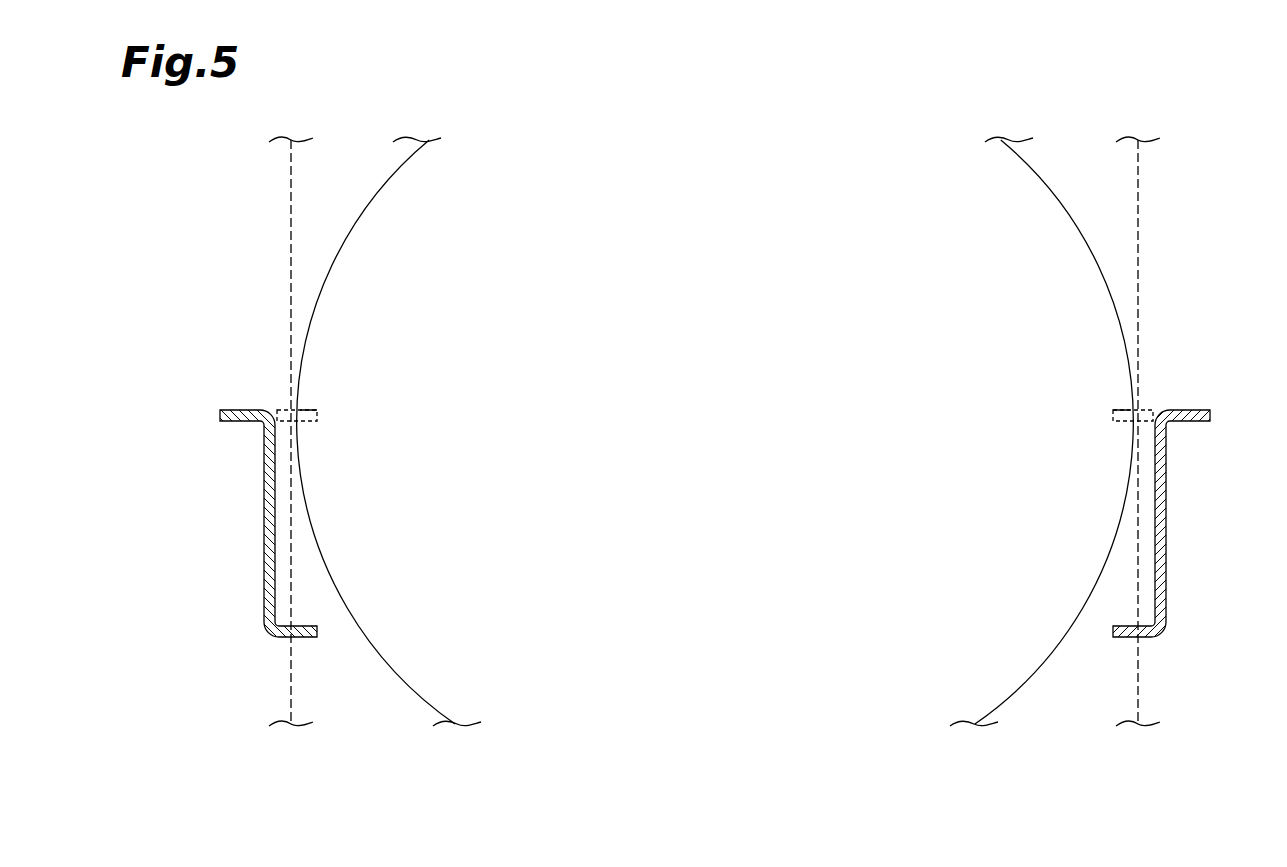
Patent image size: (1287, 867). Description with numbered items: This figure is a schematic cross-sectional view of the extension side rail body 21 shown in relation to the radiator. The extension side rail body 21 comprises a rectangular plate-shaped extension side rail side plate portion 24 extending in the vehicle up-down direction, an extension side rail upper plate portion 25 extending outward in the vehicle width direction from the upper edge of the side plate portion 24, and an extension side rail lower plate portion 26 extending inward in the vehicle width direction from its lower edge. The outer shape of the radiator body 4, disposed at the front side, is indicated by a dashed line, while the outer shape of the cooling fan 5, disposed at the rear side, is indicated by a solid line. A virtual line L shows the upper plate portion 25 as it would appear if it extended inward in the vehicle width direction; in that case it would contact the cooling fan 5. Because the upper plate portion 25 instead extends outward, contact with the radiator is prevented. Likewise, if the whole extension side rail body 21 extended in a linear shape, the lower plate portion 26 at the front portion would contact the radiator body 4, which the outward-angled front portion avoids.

The cooling fan 5 is at (343, 243).
The radiator body 4 is at (291, 282).
The extension side rail body 21 is at (715, 518).
The extension side rail side plate portion 24 is at (264, 521).
The extension side rail upper plate portion 25 is at (237, 409).
The extension side rail lower plate portion 26 is at (281, 639).
The virtual line L is at (312, 406).